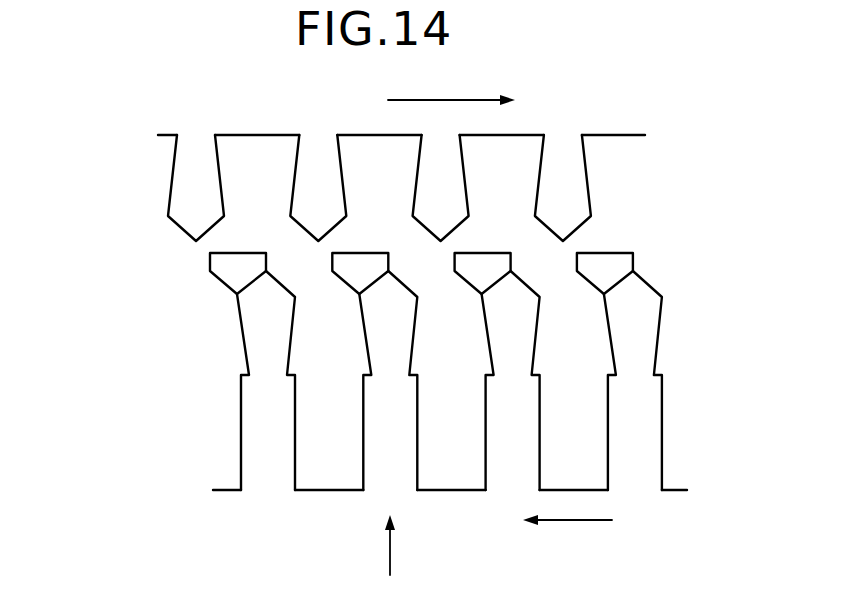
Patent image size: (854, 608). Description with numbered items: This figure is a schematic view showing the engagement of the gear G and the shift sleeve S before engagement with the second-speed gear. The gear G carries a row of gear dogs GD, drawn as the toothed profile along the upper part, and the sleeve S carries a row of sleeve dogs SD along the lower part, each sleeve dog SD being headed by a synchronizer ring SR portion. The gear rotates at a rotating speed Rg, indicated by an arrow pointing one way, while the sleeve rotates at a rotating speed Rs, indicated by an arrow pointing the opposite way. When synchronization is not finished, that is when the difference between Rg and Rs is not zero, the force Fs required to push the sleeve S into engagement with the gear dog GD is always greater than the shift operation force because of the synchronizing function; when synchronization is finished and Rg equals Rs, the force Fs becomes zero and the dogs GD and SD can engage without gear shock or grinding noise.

The gear G is at (355, 164).
The gear dog GD is at (195, 197).
The sleeve S is at (382, 371).
The synchronizer ring SR is at (223, 282).
The sleeve dog SD is at (255, 325).
The rotating speed of the gear Rg is at (468, 100).
The rotating speed of the sleeve Rs is at (582, 520).
The force required to engage the sleeve with the gear dog Fs is at (403, 545).